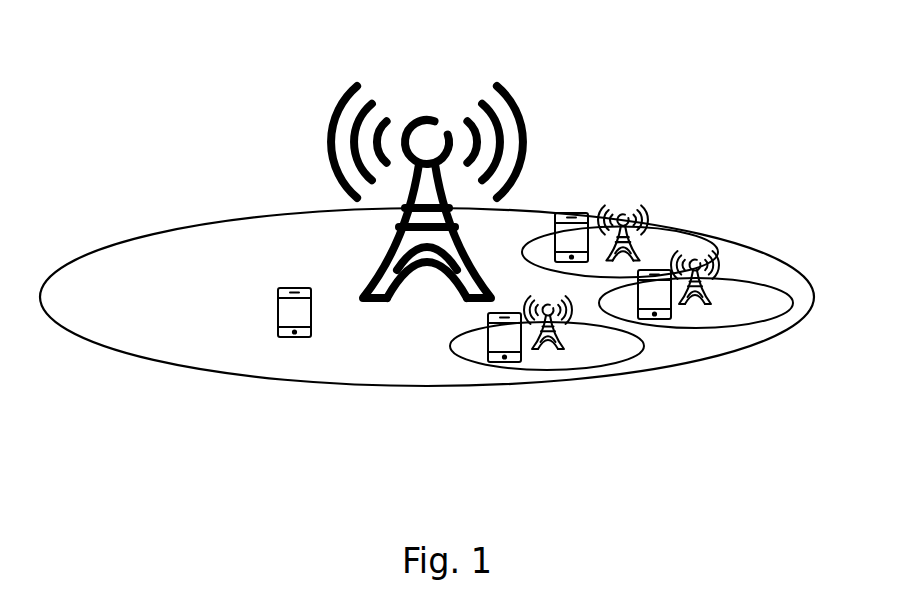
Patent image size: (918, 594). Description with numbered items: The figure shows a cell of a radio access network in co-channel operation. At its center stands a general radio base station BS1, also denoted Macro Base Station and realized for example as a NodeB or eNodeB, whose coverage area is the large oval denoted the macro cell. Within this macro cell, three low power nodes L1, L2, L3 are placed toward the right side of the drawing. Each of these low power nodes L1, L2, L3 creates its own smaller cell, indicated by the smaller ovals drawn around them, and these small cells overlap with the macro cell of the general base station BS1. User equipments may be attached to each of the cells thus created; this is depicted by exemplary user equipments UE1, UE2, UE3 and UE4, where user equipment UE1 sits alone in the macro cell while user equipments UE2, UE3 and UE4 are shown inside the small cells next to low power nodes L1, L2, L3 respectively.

The general radio base station BS1 is at (371, 88).
The user equipment UE1 is at (295, 347).
The user equipment UE2 is at (480, 348).
The user equipment UE3 is at (655, 330).
The user equipment UE4 is at (568, 198).
The low power node L1 is at (552, 355).
The low power node L2 is at (695, 305).
The low power node L3 is at (620, 192).